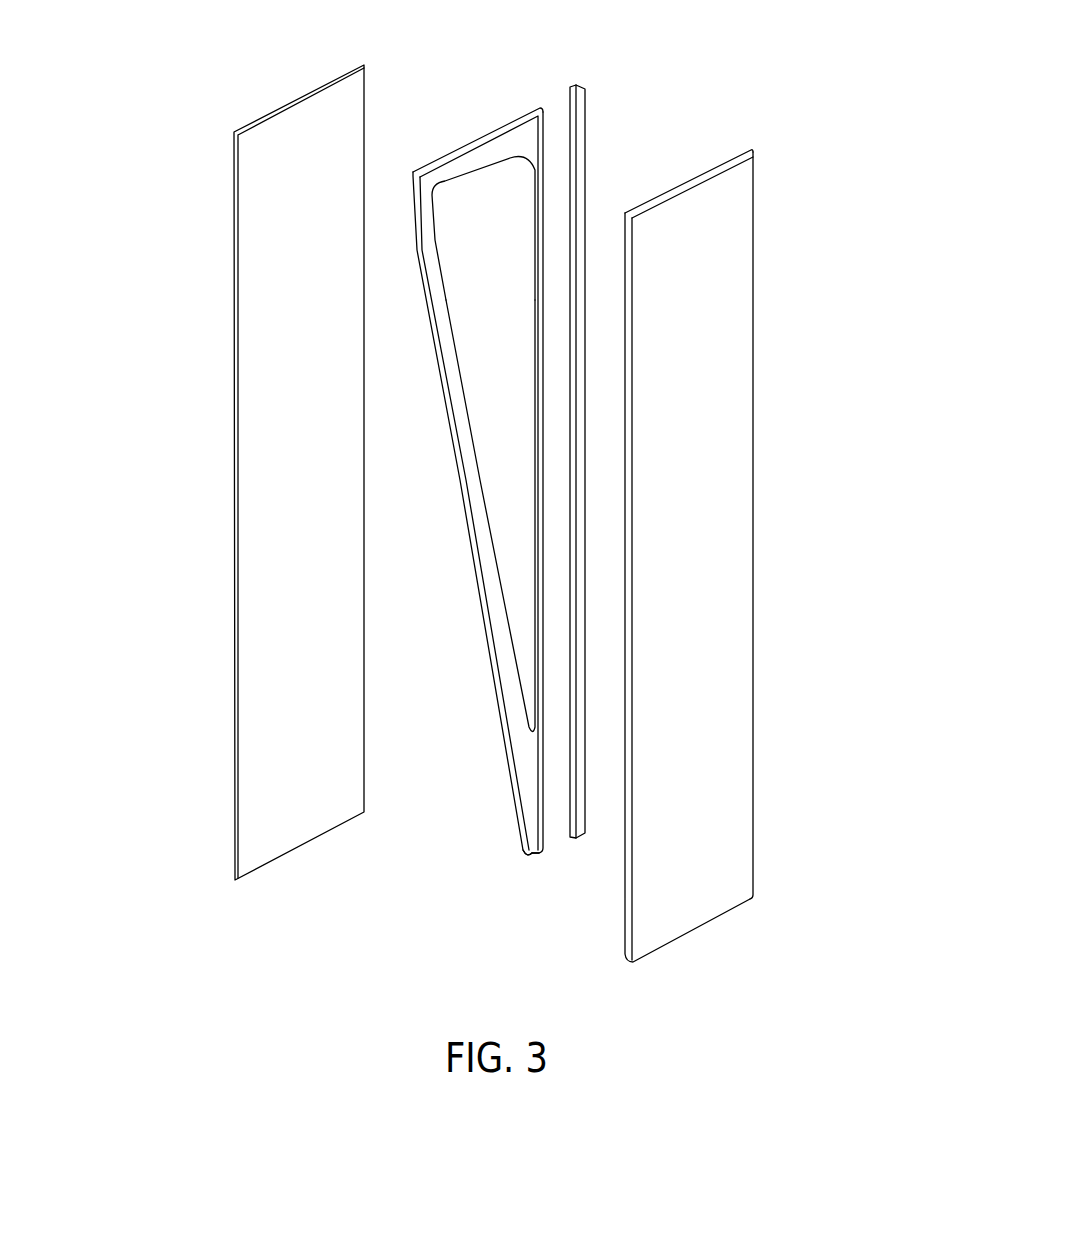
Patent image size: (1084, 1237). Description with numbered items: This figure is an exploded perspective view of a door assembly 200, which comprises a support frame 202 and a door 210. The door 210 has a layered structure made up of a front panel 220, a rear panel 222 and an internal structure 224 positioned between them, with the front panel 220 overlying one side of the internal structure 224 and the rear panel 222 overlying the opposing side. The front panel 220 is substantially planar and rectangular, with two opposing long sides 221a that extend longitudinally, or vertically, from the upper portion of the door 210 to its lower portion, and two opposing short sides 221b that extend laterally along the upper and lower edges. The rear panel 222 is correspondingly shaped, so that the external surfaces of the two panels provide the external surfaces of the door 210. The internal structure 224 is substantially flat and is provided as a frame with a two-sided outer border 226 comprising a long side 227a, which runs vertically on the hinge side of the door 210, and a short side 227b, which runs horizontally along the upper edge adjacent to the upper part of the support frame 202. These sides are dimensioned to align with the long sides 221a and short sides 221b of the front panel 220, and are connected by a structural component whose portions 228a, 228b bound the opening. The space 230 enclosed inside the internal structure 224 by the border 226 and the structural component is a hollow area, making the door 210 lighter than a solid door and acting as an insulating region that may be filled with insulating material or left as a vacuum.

The display assembly 200 is at (206, 76).
The support frame 202 is at (580, 108).
The door 210 is at (455, 901).
The front panel 220 is at (720, 788).
The long sides 221a is at (754, 533).
The short sides 221b is at (682, 185).
The rear panel 222 is at (265, 582).
The internal structure 224 is at (509, 135).
The outer border 226 is at (528, 137).
The long side 227a is at (538, 675).
The short side 227b is at (507, 240).
The lower portion of opening 228a is at (500, 594).
The upper portion of opening 228b is at (447, 172).
The space 230 is at (488, 152).